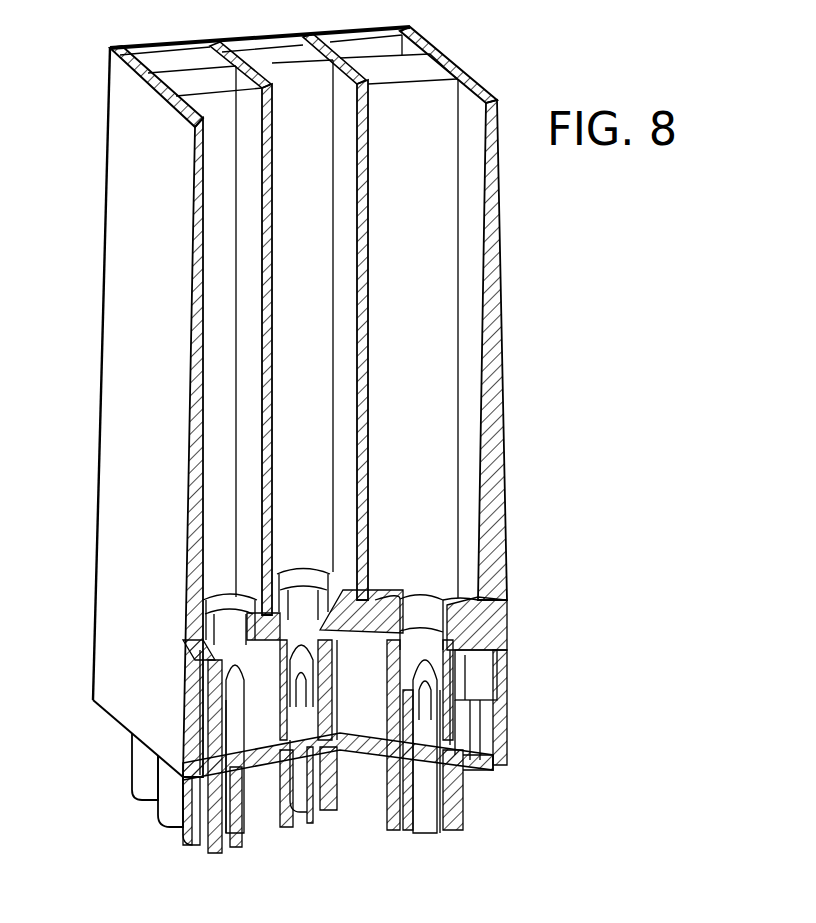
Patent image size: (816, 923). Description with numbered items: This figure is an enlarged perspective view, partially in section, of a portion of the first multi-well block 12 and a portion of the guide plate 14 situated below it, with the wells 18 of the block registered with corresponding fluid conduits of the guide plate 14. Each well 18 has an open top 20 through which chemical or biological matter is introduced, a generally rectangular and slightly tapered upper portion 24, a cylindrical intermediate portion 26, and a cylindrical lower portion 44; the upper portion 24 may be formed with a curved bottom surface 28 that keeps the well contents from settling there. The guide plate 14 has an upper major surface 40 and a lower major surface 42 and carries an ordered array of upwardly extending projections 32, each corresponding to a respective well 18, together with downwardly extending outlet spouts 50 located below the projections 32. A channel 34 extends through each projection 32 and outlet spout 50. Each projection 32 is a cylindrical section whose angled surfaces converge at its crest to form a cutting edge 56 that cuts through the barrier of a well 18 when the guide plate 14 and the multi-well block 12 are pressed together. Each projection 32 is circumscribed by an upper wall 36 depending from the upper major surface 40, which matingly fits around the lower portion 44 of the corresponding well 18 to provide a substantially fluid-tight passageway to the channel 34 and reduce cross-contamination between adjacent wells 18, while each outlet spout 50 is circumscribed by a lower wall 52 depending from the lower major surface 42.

The first multi-well block 12 is at (108, 303).
The guide plate 14 is at (494, 769).
The well 18 is at (415, 210).
The open top 20 is at (412, 68).
The upper portion 24 is at (430, 300).
The intermediate portion 26 is at (500, 598).
The curved bottom surface 28 is at (503, 560).
The projection 32 is at (431, 645).
The channel 34 is at (422, 822).
The upper wall 36 is at (505, 690).
The upper major surface 40 is at (500, 722).
The lower major surface 42 is at (480, 780).
The lower portion 44 is at (500, 648).
The outlet spout 50 is at (437, 825).
The lower wall 52 is at (465, 790).
The cutting edge 56 is at (232, 640).